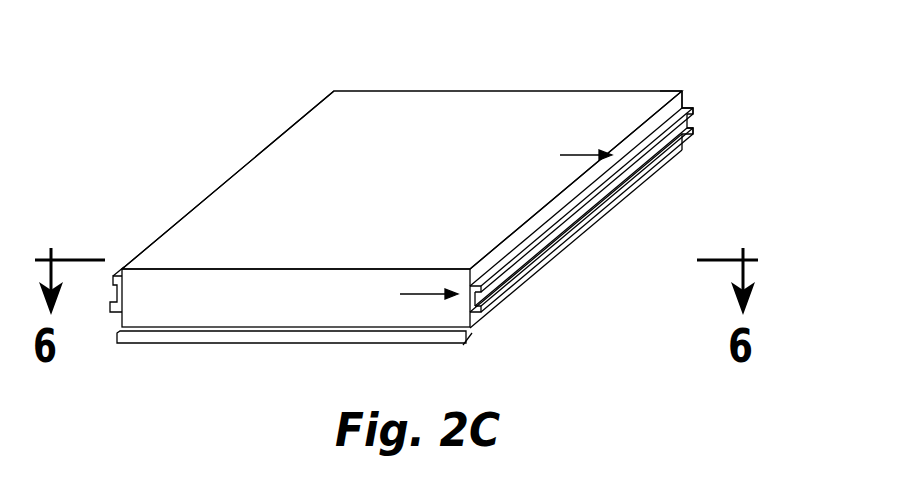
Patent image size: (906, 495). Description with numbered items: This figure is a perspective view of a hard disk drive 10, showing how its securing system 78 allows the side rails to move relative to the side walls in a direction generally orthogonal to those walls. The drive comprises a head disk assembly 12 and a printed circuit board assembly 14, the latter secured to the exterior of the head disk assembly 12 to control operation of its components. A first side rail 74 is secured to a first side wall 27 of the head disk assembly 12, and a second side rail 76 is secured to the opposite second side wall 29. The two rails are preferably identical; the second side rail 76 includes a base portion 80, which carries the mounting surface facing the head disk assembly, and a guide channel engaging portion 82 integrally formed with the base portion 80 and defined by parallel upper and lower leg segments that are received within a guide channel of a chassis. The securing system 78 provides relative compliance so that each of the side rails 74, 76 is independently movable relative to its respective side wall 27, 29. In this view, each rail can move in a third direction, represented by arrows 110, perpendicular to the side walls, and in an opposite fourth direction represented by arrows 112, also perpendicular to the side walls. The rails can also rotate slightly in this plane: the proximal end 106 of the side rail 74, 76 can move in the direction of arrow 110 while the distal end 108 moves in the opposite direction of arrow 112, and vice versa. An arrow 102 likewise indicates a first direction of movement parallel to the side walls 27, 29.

The hard disk drive 10 is at (431, 221).
The head disk assembly 12 is at (455, 104).
The printed circuit board assembly 14 is at (249, 344).
The first side wall 27 is at (238, 171).
The second side wall 29 is at (683, 100).
The first side rail 74 is at (108, 314).
The second side rail 76 is at (570, 214).
The securing system 78 is at (522, 215).
The base portion 80 is at (560, 228).
The guide channel engaging portion 82 is at (636, 128).
The arrow 102 is at (668, 75).
The proximal end 106 is at (467, 331).
The distal end 108 is at (688, 118).
The arrow 110 is at (660, 155).
The arrow 112 is at (574, 153).